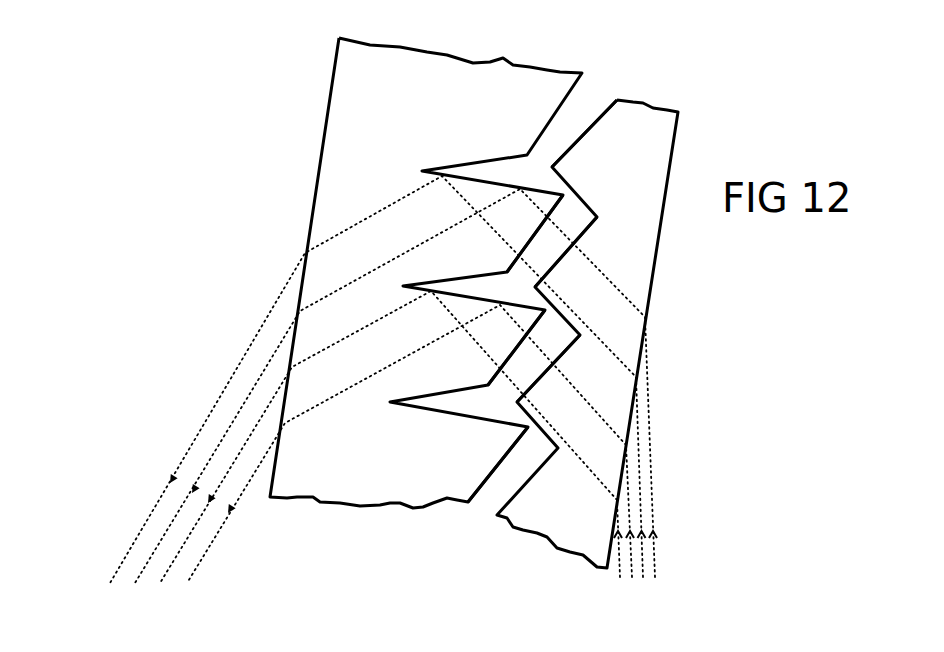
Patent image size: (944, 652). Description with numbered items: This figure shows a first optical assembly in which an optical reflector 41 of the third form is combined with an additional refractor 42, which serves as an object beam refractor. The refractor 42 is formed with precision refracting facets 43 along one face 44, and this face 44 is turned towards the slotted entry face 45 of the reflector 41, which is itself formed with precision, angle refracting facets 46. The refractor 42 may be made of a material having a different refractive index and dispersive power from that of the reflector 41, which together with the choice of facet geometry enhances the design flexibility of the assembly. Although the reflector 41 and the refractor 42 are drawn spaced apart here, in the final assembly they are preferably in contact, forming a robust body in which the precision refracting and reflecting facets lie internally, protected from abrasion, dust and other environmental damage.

The optical reflector 41 is at (348, 118).
The additional refractor 42 is at (638, 258).
The precision refracting facets 43 is at (583, 138).
The face 44 is at (594, 98).
The slotted entry face 45 is at (497, 488).
The angle refracting facets 46 is at (537, 229).